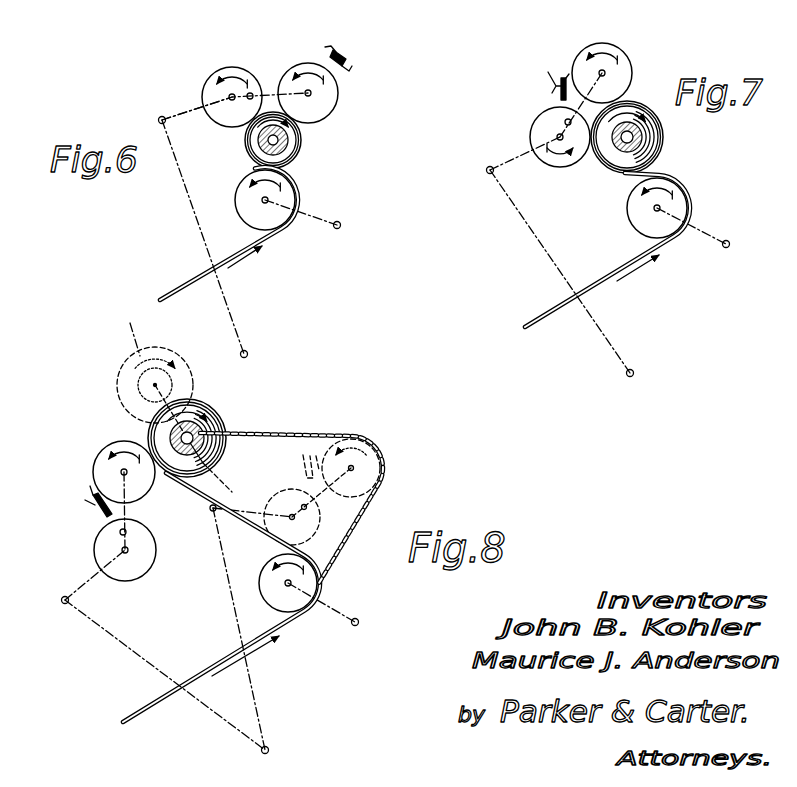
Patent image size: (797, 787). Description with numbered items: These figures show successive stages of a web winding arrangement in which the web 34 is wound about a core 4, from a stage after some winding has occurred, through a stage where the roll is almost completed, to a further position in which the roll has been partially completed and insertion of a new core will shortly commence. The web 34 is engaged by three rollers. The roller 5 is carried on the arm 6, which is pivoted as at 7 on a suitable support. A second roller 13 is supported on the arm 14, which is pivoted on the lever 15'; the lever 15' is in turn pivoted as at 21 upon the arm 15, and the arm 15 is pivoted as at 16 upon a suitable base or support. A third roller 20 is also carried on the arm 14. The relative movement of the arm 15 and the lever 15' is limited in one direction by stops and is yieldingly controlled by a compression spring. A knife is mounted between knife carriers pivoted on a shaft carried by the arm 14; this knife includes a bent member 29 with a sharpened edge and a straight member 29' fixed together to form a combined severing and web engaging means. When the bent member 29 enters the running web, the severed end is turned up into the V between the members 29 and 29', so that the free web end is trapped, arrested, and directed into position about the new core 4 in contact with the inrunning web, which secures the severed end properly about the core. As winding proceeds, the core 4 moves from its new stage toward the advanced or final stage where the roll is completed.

In FIG. 6, the core 4 is at (283, 144).
In FIG. 7, the core 4 is at (643, 138).
In FIG. 8, the core 4 is at (118, 383).
In FIG. 6, the roller 5 is at (237, 203).
In FIG. 7, the roller 5 is at (627, 213).
In FIG. 8, the roller 5 is at (288, 583).
In FIG. 6, the arm 6 is at (315, 216).
In FIG. 7, the arm 6 is at (698, 230).
In FIG. 8, the arm 6 is at (343, 614).
In FIG. 6, the pivot 7 is at (341, 225).
In FIG. 7, the pivot 7 is at (729, 244).
In FIG. 8, the pivot 7 is at (359, 622).
In FIG. 6, the second roller 13 is at (222, 117).
In FIG. 7, the second roller 13 is at (553, 167).
In FIG. 8, the second roller 13 is at (132, 572).
In FIG. 6, the arm 14 is at (272, 90).
In FIG. 7, the arm 14 is at (588, 88).
In FIG. 8, the arm 14 is at (128, 512).
In FIG. 6, the arm 15 is at (215, 237).
In FIG. 7, the arm 15 is at (560, 271).
In FIG. 8, the arm 15 is at (179, 629).
In FIG. 6, the lever 15' is at (197, 102).
In FIG. 7, the lever 15' is at (521, 145).
In FIG. 8, the lever 15' is at (165, 554).
In FIG. 6, the pivot 16 is at (247, 351).
In FIG. 7, the pivot 16 is at (634, 370).
In FIG. 8, the pivot 16 is at (269, 749).
In FIG. 6, the third roller 20 is at (339, 95).
In FIG. 7, the third roller 20 is at (626, 61).
In FIG. 8, the third roller 20 is at (118, 447).
In FIG. 6, the pivot 21 is at (158, 120).
In FIG. 7, the pivot 21 is at (486, 170).
In FIG. 8, the pivot 21 is at (62, 603).
In FIG. 6, the knife 29 is at (357, 52).
In FIG. 7, the knife 29 is at (551, 70).
In FIG. 8, the knife 29 is at (182, 483).
In FIG. 6, the straight member 29' is at (363, 78).
In FIG. 7, the straight member 29' is at (581, 50).
In FIG. 8, the straight member 29' is at (80, 477).
In FIG. 6, the web 34 is at (191, 278).
In FIG. 7, the web 34 is at (607, 279).
In FIG. 8, the web 34 is at (228, 656).